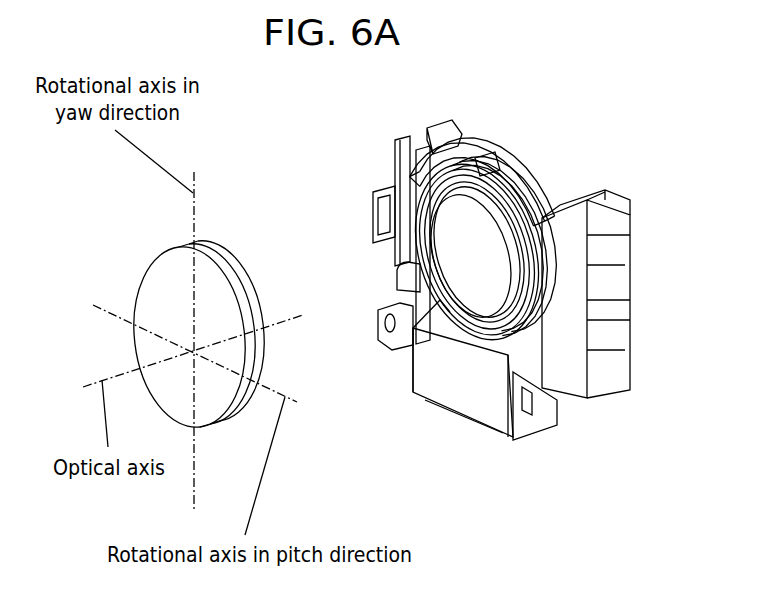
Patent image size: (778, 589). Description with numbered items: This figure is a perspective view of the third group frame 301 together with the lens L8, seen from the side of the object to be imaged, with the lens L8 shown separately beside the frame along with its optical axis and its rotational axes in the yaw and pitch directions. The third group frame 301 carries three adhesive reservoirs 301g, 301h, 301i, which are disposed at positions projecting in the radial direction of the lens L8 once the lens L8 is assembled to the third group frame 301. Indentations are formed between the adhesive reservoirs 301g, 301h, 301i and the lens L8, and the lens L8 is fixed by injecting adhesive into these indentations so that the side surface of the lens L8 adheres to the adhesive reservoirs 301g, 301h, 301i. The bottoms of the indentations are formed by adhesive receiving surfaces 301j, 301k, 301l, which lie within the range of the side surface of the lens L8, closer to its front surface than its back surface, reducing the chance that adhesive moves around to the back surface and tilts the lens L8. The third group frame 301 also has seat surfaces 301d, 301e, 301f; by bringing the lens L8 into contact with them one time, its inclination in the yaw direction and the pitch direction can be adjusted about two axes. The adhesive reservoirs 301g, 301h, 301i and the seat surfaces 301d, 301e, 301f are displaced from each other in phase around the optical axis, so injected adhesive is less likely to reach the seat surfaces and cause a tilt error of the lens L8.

The third group frame 301 is at (464, 290).
The seat surface 301d is at (422, 188).
The seat surface 301e is at (467, 335).
The seat surface 301f is at (522, 230).
The adhesive reservoir 301g is at (483, 148).
The adhesive reservoir 301h is at (400, 278).
The adhesive reservoir 301i is at (533, 360).
The adhesive receiving surface 301j is at (442, 155).
The adhesive receiving surface 301k is at (425, 295).
The adhesive receiving surface 301l is at (510, 340).
The lens L8 is at (217, 395).